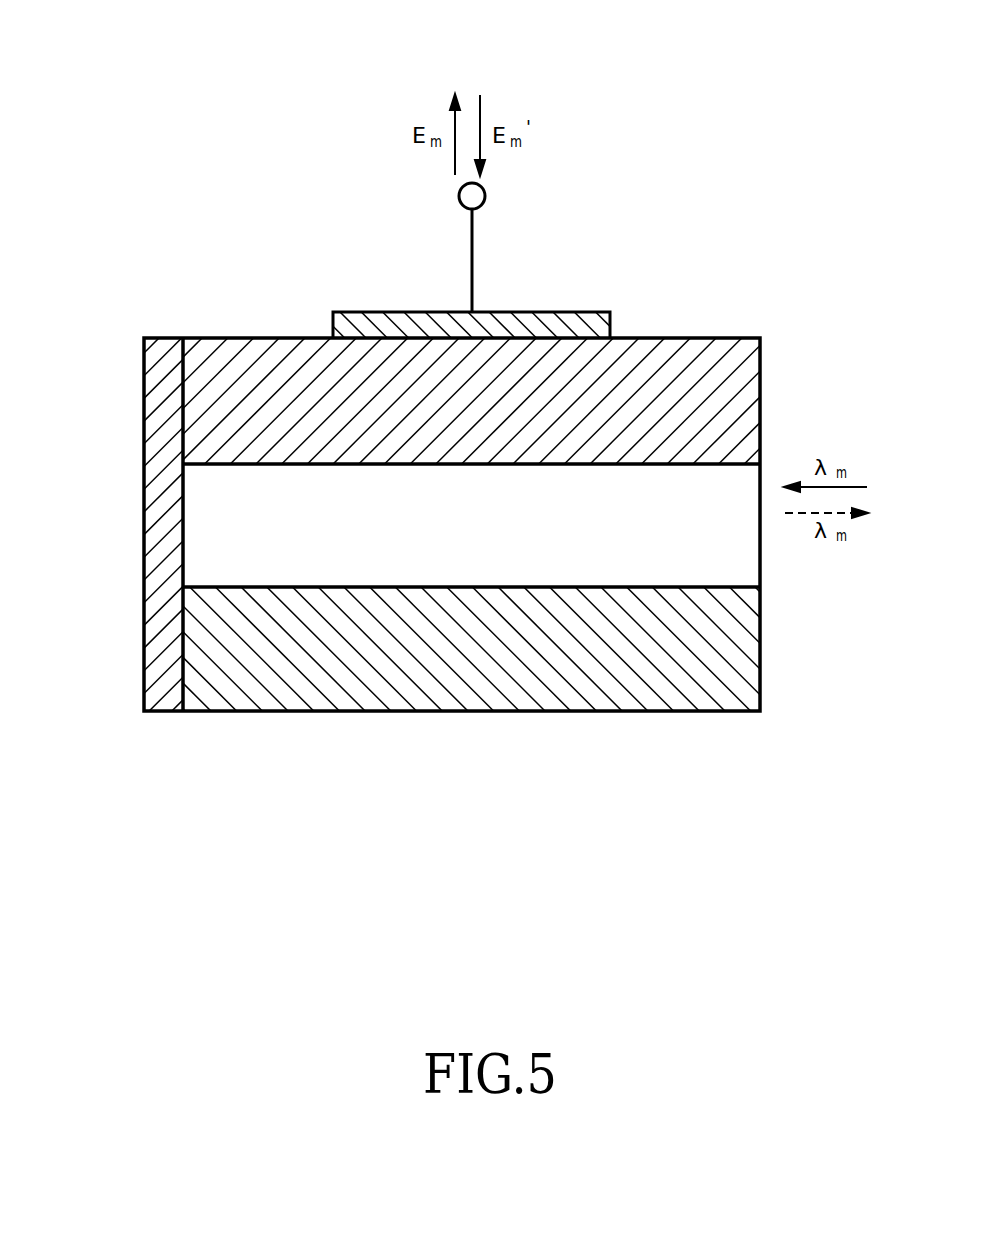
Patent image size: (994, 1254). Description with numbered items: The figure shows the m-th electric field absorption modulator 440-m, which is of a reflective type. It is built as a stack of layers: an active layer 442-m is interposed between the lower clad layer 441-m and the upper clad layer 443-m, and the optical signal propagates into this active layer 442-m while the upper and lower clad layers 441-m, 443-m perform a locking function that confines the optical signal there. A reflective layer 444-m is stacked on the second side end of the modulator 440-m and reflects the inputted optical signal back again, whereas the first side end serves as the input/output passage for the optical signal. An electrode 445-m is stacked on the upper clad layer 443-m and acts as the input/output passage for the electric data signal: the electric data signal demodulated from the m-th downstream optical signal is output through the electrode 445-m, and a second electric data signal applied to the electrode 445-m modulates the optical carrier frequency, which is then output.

The electric field absorption modulator 440-m is at (707, 80).
The lower clad layer 441-m is at (754, 650).
The active layer 442-m is at (754, 561).
The upper clad layer 443-m is at (752, 408).
The reflective layer 444-m is at (150, 550).
The electrode 445-m is at (563, 312).